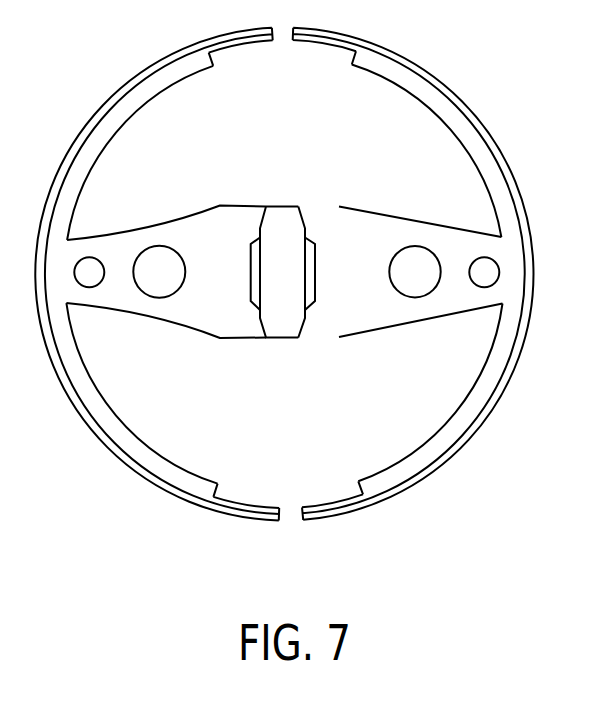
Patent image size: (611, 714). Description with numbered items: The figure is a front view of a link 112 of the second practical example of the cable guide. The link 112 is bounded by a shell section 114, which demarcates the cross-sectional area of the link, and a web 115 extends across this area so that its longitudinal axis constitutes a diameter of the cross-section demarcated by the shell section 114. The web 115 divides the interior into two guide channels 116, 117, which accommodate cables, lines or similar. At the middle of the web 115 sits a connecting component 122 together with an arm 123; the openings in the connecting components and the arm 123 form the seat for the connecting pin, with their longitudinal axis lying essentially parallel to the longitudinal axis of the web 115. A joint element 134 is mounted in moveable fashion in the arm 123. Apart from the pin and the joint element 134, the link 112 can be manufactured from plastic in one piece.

The link 112 is at (302, 281).
The shell section 114 is at (503, 152).
The web 115 is at (215, 226).
The guide channel 116 is at (363, 160).
The guide channel 117 is at (363, 437).
The connecting component 122 is at (277, 338).
The arm 123 is at (280, 307).
The joint element 134 is at (312, 285).